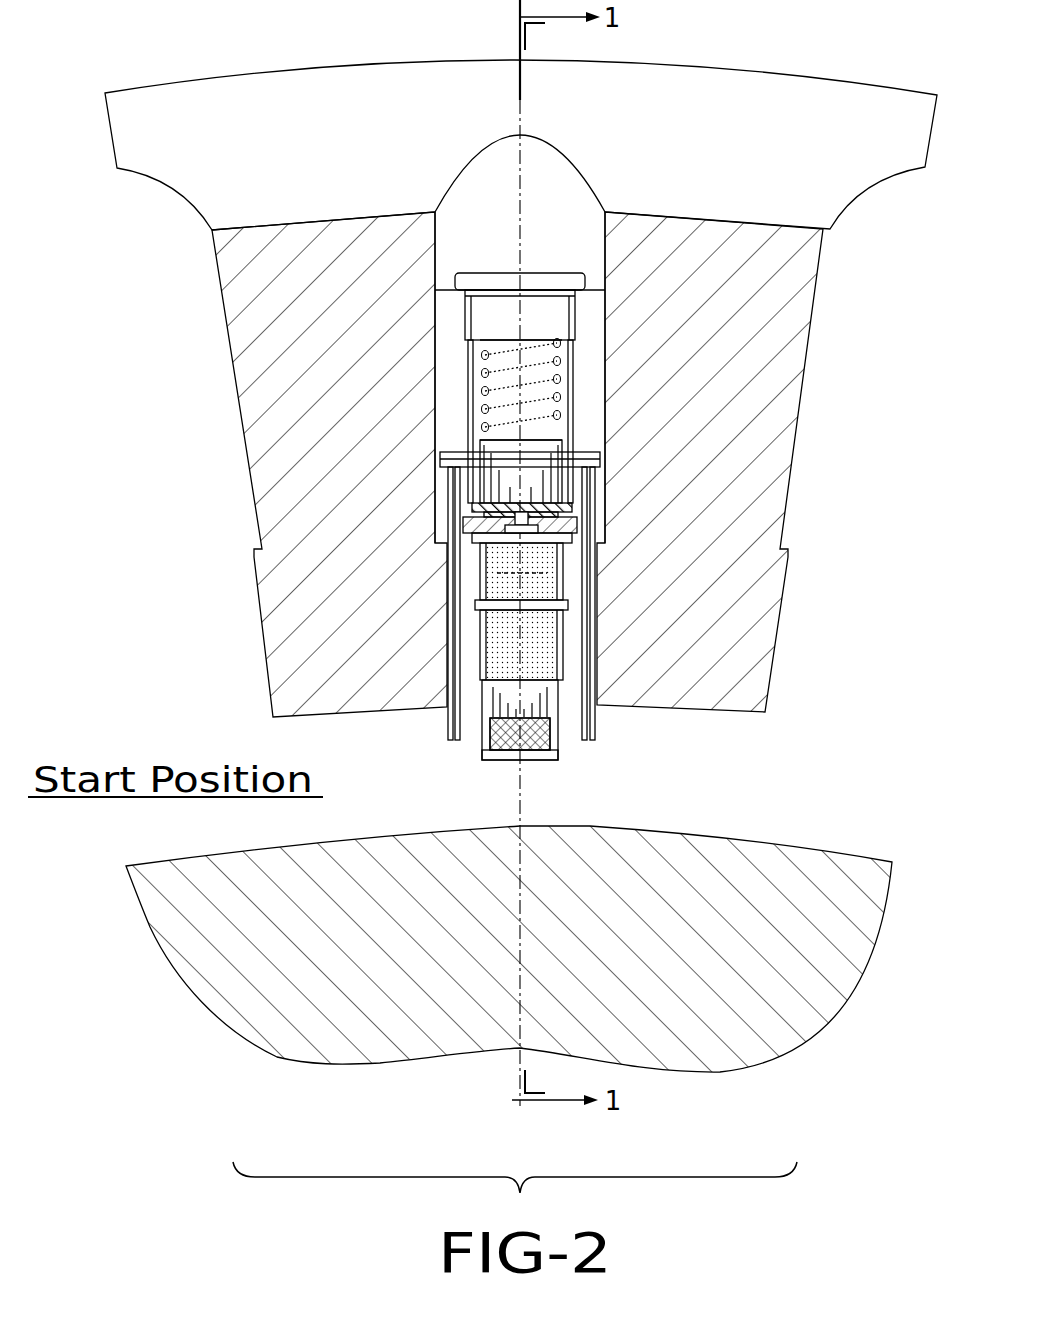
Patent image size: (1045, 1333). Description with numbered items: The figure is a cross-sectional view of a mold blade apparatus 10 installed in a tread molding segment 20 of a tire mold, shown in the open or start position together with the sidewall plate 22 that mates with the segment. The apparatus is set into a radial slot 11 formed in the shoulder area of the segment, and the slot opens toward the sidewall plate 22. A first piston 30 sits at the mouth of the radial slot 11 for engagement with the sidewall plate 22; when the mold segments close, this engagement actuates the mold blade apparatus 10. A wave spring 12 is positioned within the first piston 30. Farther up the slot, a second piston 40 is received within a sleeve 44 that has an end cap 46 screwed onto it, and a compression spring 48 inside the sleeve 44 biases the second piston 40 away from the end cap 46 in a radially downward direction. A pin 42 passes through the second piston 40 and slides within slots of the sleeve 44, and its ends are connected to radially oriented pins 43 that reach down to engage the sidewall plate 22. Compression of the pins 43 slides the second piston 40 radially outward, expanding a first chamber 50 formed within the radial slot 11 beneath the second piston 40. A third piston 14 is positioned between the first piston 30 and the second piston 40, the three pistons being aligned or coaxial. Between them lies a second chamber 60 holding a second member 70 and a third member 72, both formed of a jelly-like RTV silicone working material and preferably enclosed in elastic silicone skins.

The mold blade apparatus 10 is at (484, 242).
The radial slot 11 is at (437, 250).
The wave spring 12 is at (538, 740).
The third piston 14 is at (508, 697).
The tread molding segment 20 is at (795, 282).
The sidewall plate 22 is at (736, 858).
The first piston 30 is at (542, 763).
The second piston 40 is at (507, 473).
The pin 42 is at (447, 451).
The radially oriented pins 43 is at (448, 672).
The sleeve 44 is at (565, 478).
The end cap 46 is at (538, 290).
The compression spring 48 is at (535, 378).
The first chamber 50 is at (548, 512).
The second chamber 60 is at (555, 538).
The second member 70 is at (542, 643).
The third member 72 is at (547, 585).